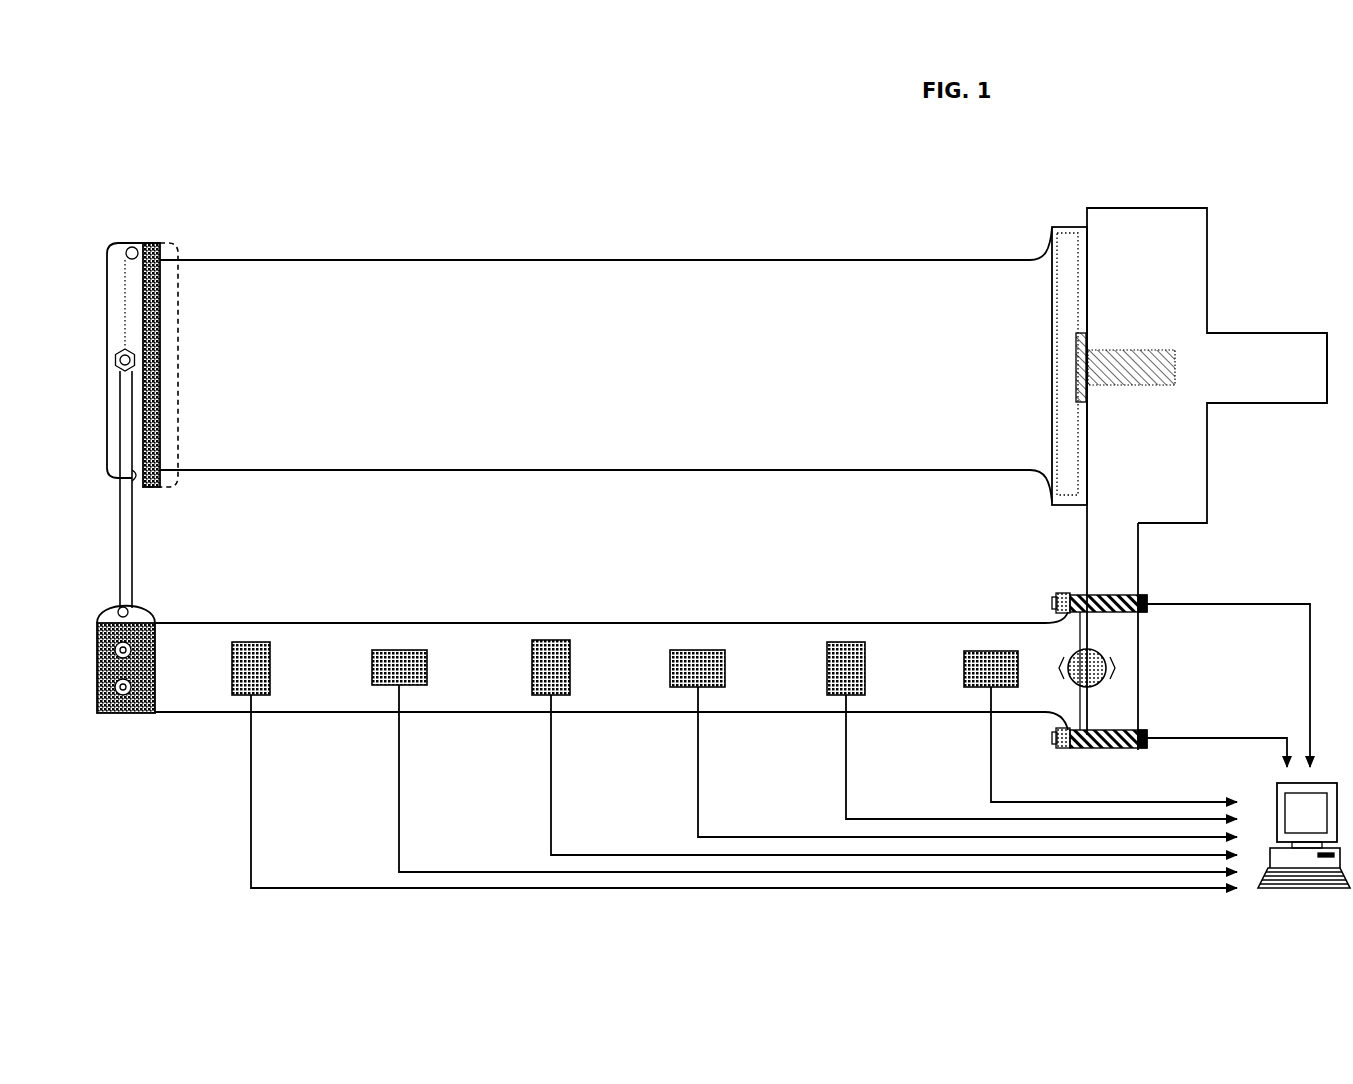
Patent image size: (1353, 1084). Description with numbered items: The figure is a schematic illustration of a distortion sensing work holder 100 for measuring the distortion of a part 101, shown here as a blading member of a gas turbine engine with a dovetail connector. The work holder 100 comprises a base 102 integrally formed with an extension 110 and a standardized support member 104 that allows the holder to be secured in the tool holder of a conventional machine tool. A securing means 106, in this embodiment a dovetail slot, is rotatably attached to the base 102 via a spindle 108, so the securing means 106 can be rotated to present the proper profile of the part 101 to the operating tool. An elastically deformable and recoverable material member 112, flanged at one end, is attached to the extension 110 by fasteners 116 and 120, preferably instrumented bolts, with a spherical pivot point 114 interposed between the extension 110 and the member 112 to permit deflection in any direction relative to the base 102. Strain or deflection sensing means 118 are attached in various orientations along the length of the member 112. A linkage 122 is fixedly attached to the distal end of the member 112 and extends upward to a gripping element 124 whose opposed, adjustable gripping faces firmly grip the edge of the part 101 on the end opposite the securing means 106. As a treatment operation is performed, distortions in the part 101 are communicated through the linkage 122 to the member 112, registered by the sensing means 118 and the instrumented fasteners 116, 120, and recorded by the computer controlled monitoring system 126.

The work holder 100 is at (722, 150).
The part 101 is at (510, 278).
The base 102 is at (1168, 226).
The support member 104 is at (1270, 352).
The securing means 106 is at (1060, 236).
The spindle 108 is at (1162, 385).
The extension 110 is at (1110, 556).
The elastically deformable and recoverable material member 112 is at (165, 695).
The spherical pivot point 114 is at (1073, 655).
The fastener 116 is at (1107, 730).
The strain or deflection sensing means 118 is at (677, 652).
The fastener 120 is at (1135, 598).
The linkage 122 is at (122, 556).
The gripping element 124 is at (120, 262).
The means for capturing and recording output 126 is at (1304, 835).